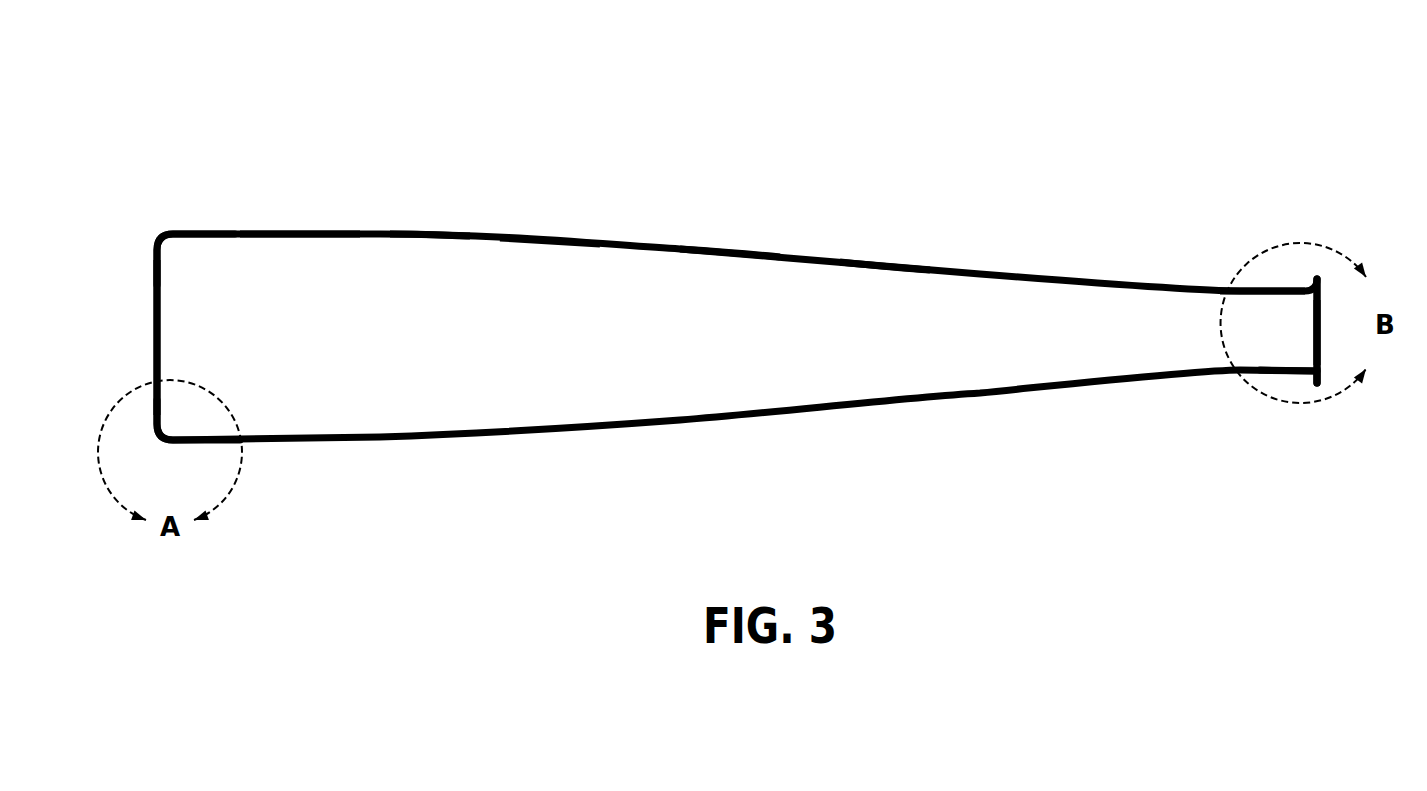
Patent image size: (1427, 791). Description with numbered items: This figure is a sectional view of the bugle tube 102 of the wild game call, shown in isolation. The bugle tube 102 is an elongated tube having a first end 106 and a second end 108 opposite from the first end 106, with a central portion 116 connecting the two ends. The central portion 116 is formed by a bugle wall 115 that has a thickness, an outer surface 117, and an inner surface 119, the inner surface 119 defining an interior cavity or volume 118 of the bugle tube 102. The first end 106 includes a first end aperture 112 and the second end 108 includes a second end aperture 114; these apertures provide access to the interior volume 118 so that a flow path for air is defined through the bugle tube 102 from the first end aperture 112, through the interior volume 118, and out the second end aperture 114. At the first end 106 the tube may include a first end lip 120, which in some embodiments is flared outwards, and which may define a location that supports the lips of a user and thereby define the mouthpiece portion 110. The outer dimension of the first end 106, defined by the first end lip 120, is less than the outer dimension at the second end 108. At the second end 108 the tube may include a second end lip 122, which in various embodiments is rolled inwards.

The bugle tube 102 is at (247, 134).
The first end 106 is at (1308, 290).
The second end 108 is at (157, 245).
The mouthpiece portion 110 is at (1250, 290).
The first end aperture 112 is at (1314, 351).
The second end aperture 114 is at (143, 328).
The bugle wall 115 is at (547, 280).
The central portion 116 is at (727, 250).
The outer surface 117 is at (427, 219).
The interior volume 118 is at (885, 300).
The inner surface 119 is at (297, 262).
The first end lip 120 is at (1313, 380).
The second end lip 122 is at (158, 423).